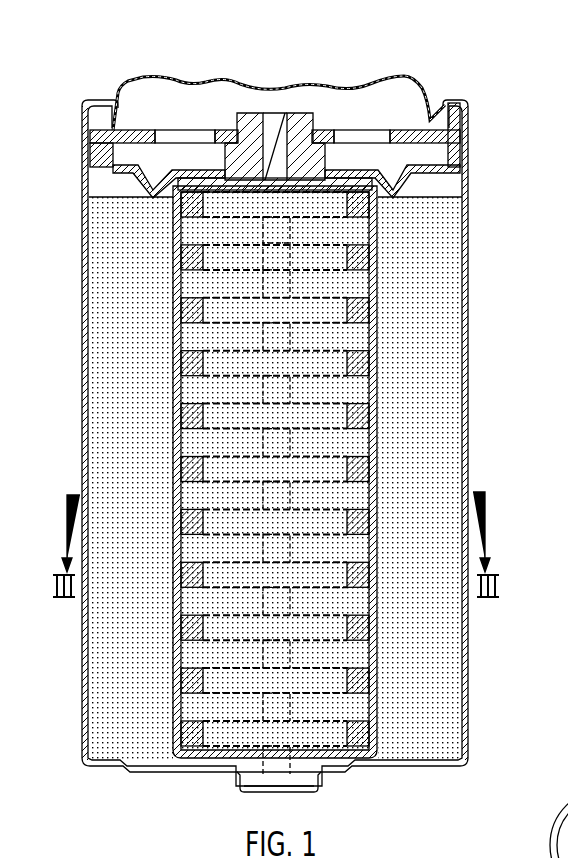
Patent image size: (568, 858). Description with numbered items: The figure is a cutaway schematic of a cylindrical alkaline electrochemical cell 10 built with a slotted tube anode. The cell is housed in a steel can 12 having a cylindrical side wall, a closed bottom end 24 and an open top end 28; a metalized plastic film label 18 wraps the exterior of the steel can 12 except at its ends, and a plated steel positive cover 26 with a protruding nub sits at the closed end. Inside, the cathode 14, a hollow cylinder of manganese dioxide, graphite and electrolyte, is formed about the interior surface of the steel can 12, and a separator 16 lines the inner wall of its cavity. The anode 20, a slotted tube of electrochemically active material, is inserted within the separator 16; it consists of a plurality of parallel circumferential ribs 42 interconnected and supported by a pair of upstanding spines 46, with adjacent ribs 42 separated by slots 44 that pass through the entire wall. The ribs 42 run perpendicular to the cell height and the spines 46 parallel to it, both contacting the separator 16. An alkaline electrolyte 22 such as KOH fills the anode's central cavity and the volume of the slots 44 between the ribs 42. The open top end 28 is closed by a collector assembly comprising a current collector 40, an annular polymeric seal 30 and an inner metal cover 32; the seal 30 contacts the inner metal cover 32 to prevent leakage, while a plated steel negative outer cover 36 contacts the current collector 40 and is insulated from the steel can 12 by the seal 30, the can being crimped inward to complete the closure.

The electrochemical cell 10 is at (415, 58).
The steel can 12 is at (83, 436).
The cathode 14 is at (110, 406).
The separator 16 is at (192, 350).
The label 18 is at (83, 468).
The anode 20 is at (183, 278).
The alkaline electrolyte 22 is at (200, 223).
The closed bottom end 24 is at (273, 762).
The positive cover 26 is at (302, 791).
The open top end 28 is at (397, 113).
The annular polymeric seal 30 is at (240, 113).
The inner metal cover 32 is at (130, 130).
The negative outer cover 36 is at (171, 82).
The current collector 40 is at (271, 113).
The circumferential ribs 42 is at (378, 470).
The slots 44 is at (400, 703).
The spines 46 is at (378, 347).